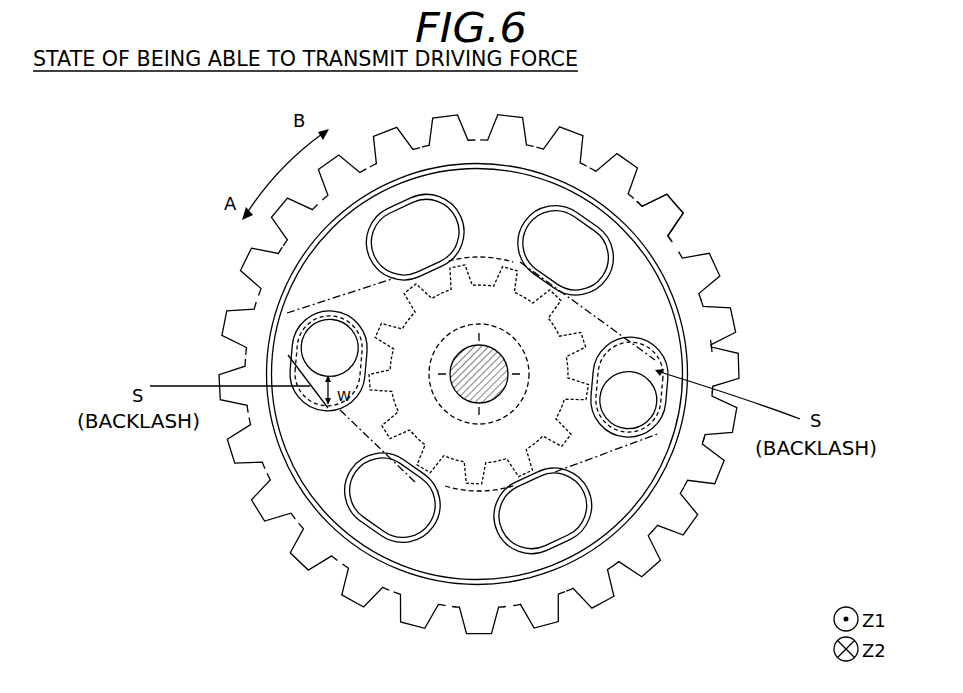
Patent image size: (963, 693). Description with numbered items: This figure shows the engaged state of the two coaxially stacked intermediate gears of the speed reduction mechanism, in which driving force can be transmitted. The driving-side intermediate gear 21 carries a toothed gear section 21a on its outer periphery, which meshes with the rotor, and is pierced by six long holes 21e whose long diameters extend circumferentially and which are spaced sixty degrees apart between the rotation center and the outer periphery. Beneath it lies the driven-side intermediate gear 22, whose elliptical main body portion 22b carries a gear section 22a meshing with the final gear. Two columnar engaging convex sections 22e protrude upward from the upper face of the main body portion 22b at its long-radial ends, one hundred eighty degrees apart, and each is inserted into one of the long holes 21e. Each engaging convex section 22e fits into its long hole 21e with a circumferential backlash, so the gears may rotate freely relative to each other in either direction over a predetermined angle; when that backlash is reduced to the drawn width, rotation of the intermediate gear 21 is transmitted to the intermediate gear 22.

The intermediate gear 21 is at (647, 195).
The gear section 21a is at (683, 230).
The long hole 21e is at (408, 213).
The intermediate gear 22 is at (484, 250).
The gear section 22a is at (508, 257).
The main body portion 22b is at (600, 313).
The engaging convex section 22e is at (320, 333).